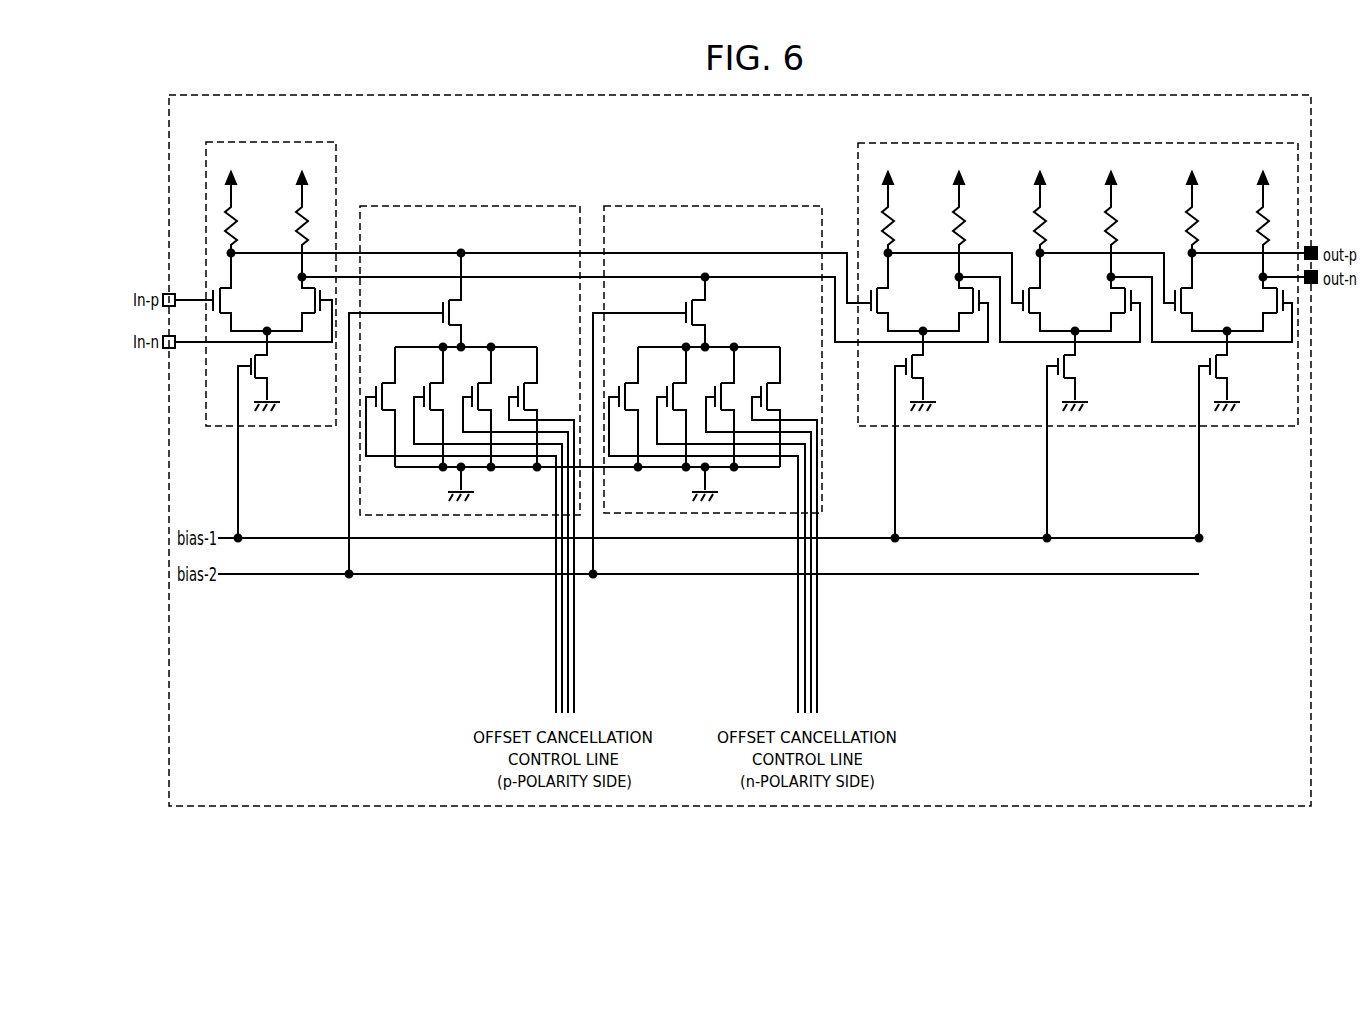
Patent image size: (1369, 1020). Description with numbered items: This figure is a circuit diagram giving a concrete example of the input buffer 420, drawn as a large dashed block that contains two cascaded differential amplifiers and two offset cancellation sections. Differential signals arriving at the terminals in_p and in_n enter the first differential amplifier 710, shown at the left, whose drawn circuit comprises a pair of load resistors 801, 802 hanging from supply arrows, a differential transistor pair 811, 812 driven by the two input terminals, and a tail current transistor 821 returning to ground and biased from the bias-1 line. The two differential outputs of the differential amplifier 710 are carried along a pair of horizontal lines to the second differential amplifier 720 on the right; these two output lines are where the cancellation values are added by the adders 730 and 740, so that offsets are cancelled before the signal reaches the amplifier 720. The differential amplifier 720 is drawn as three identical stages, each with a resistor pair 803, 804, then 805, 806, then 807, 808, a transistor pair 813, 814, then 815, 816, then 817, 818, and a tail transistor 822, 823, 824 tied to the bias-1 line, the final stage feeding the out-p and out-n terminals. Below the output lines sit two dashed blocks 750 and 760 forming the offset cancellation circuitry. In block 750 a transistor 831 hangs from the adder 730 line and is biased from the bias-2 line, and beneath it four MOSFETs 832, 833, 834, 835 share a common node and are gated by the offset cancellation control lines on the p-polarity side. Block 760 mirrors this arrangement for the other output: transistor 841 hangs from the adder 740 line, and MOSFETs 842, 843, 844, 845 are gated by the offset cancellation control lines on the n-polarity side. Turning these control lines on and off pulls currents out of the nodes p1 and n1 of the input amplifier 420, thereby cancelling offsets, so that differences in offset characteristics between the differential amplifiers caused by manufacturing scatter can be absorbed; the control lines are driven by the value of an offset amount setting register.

The input buffer 420 is at (975, 95).
The differential amplifier 710 is at (269, 142).
The differential amplifier 720 is at (927, 143).
The adder 730 is at (463, 251).
The adder 740 is at (702, 281).
The offset cancellation circuit (p-polarity side) 750 is at (471, 206).
The offset cancellation circuit (n-polarity side) 760 is at (715, 206).
The resistor 801 is at (238, 216).
The resistor 802 is at (297, 237).
The resistor 803 is at (893, 216).
The resistor 804 is at (955, 237).
The resistor 805 is at (1045, 216).
The resistor 806 is at (1107, 237).
The resistor 807 is at (1197, 216).
The resistor 808 is at (1259, 237).
The transistor 811 is at (232, 293).
The transistor 812 is at (308, 315).
The transistor 813 is at (889, 295).
The transistor 814 is at (966, 318).
The transistor 815 is at (1041, 295).
The transistor 816 is at (1118, 318).
The transistor 817 is at (1193, 295).
The transistor 818 is at (1270, 318).
The current source transistor 821 is at (265, 374).
The current source transistor 822 is at (925, 372).
The current source transistor 823 is at (1077, 372).
The current source transistor 824 is at (1229, 372).
The transistor 831 is at (465, 317).
The MOSFET 832 is at (392, 396).
The MOSFET 833 is at (440, 396).
The MOSFET 834 is at (489, 396).
The MOSFET 835 is at (535, 396).
The transistor 841 is at (708, 317).
The MOSFET 842 is at (635, 396).
The MOSFET 843 is at (683, 396).
The MOSFET 844 is at (732, 396).
The MOSFET 845 is at (778, 396).